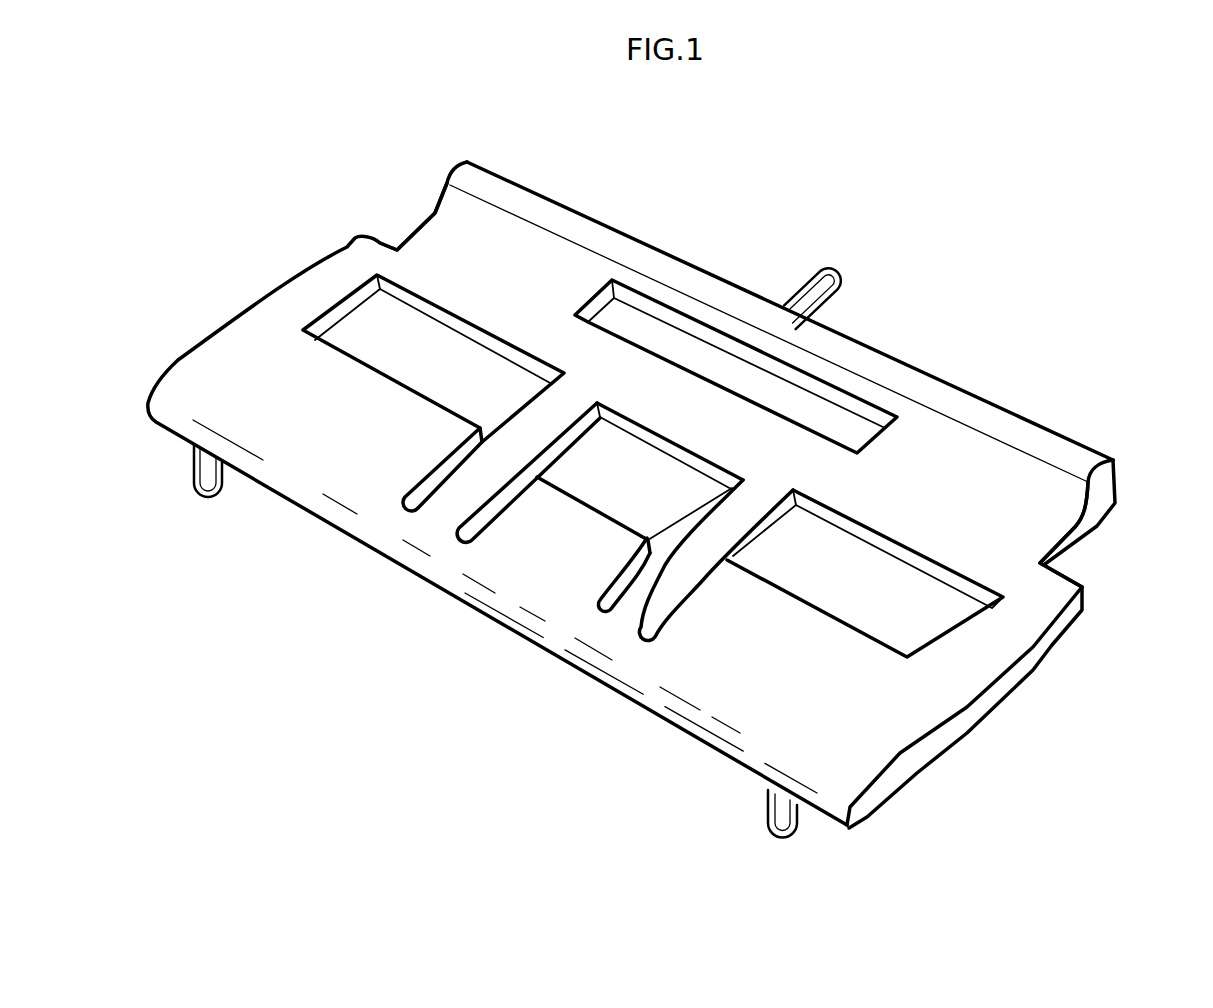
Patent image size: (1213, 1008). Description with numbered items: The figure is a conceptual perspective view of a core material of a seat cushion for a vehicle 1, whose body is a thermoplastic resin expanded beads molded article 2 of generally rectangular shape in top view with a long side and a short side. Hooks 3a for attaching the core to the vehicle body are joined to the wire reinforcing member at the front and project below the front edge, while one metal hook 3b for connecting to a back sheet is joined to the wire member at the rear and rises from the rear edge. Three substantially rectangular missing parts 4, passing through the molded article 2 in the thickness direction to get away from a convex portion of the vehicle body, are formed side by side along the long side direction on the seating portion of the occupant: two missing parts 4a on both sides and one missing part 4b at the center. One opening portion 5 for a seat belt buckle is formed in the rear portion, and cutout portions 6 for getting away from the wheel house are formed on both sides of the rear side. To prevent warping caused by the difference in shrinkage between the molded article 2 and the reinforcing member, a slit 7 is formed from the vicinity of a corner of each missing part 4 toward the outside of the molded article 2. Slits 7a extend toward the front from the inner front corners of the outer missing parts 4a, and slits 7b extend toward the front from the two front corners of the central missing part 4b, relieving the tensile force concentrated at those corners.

The core material of a seat cushion for a vehicle 1 is at (668, 493).
The expanded beads molded article 2 is at (927, 440).
The hook 3a is at (203, 498).
The metal hook 3b is at (801, 270).
The missing part 4 is at (653, 450).
The missing part 4a is at (460, 362).
The missing part 4b is at (640, 477).
The opening portion for seat belt buckle 5 is at (700, 355).
The cutout portion 6 is at (407, 210).
The slit 7 is at (570, 542).
The slit 7a is at (420, 478).
The slit 7b is at (633, 552).